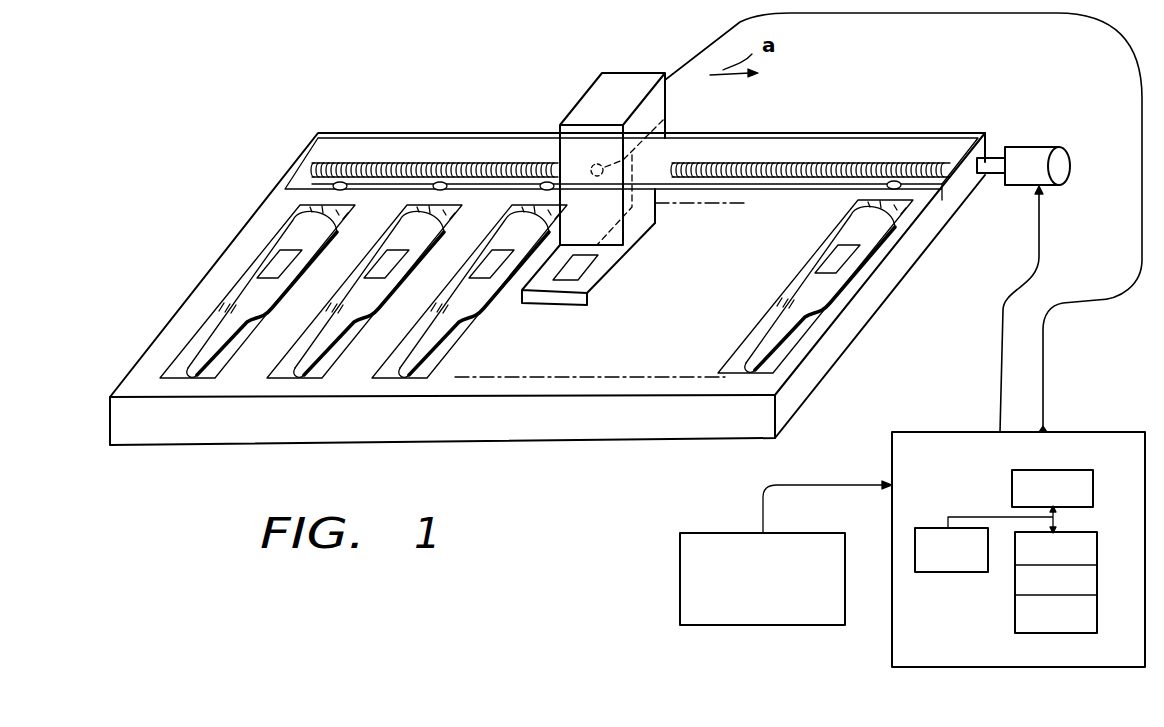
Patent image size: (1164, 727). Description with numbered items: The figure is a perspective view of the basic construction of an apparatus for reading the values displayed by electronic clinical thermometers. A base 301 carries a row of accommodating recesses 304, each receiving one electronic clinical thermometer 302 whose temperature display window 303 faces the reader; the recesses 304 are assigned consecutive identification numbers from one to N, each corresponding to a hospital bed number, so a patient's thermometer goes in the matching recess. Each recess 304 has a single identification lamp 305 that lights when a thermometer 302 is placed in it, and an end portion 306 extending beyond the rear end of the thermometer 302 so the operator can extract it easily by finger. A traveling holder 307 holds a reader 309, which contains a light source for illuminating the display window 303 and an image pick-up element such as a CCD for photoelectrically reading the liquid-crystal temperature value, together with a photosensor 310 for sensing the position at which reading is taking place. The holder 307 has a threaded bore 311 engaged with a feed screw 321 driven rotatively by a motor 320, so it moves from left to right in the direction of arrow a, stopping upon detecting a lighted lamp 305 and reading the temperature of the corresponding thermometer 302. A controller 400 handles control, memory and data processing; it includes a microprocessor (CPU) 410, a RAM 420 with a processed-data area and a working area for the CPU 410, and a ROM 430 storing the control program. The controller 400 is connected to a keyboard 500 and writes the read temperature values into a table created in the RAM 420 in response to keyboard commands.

The base 301 is at (177, 432).
The electronic clinical thermometer 302 is at (248, 292).
The temperature display window 303 is at (280, 252).
The accommodating recess 304 is at (213, 317).
The identification lamp 305 is at (340, 182).
The end portion 306 is at (372, 165).
The traveling holder 307 is at (607, 74).
The reader 309 is at (577, 276).
The photosensor 310 is at (603, 173).
The threaded bore 311 is at (695, 150).
The motor 320 is at (1013, 147).
The feed screw 321 is at (933, 158).
The controller 400 is at (1140, 432).
The microprocessor (CPU) 410 is at (1087, 470).
The RAM 420 is at (1097, 548).
The ROM 430 is at (937, 528).
The keyboard 500 is at (680, 583).